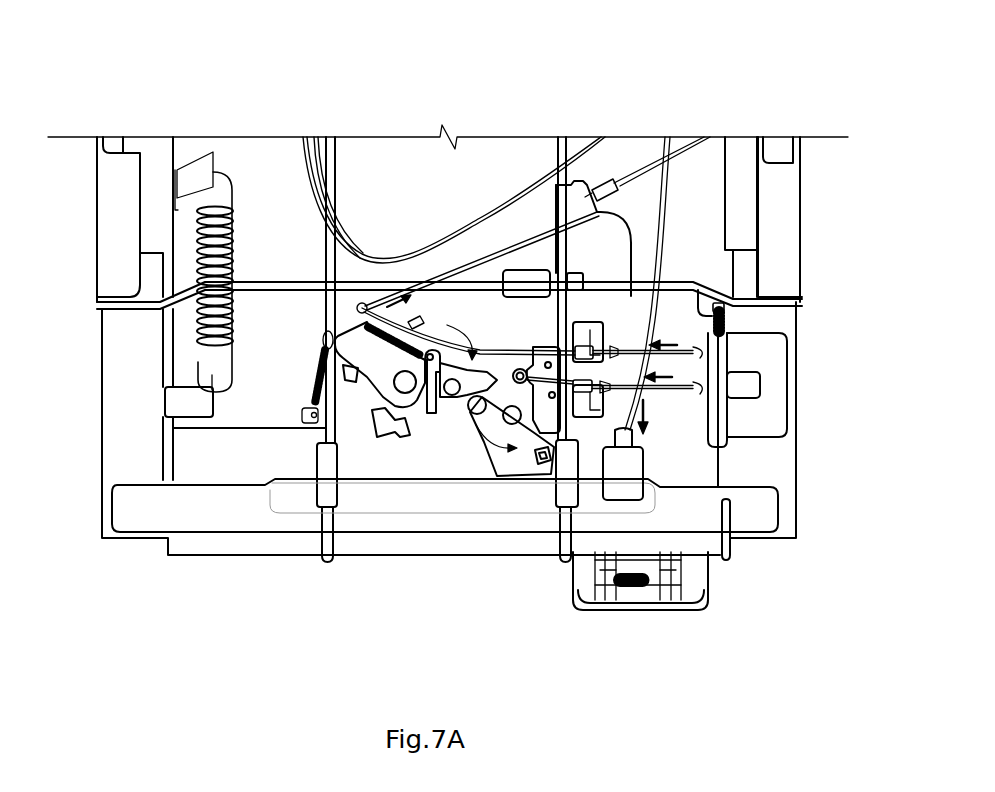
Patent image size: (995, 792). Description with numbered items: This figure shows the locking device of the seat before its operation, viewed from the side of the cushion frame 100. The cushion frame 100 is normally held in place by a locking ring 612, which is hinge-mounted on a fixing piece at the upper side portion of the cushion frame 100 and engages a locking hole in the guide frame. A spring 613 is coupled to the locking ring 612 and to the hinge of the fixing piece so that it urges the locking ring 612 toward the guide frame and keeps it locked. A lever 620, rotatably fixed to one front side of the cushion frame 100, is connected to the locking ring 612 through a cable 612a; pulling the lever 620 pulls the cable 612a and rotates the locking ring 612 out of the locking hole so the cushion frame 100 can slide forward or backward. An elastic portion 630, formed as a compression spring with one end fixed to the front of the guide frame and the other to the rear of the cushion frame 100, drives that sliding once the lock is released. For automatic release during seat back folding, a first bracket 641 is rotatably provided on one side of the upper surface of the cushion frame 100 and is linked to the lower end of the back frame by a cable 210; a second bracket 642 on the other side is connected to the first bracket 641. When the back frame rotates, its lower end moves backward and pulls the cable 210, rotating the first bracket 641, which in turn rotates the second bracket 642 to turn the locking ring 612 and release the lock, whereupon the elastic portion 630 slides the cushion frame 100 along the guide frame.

The cushion frame 100 is at (372, 540).
The cable 210 is at (648, 183).
The locking ring 612 is at (724, 387).
The cable 612a is at (505, 366).
The spring 613 is at (722, 320).
The lever 620 is at (707, 578).
The elastic portion 630 is at (200, 246).
The first bracket 641 is at (377, 353).
The second bracket 642 is at (508, 400).